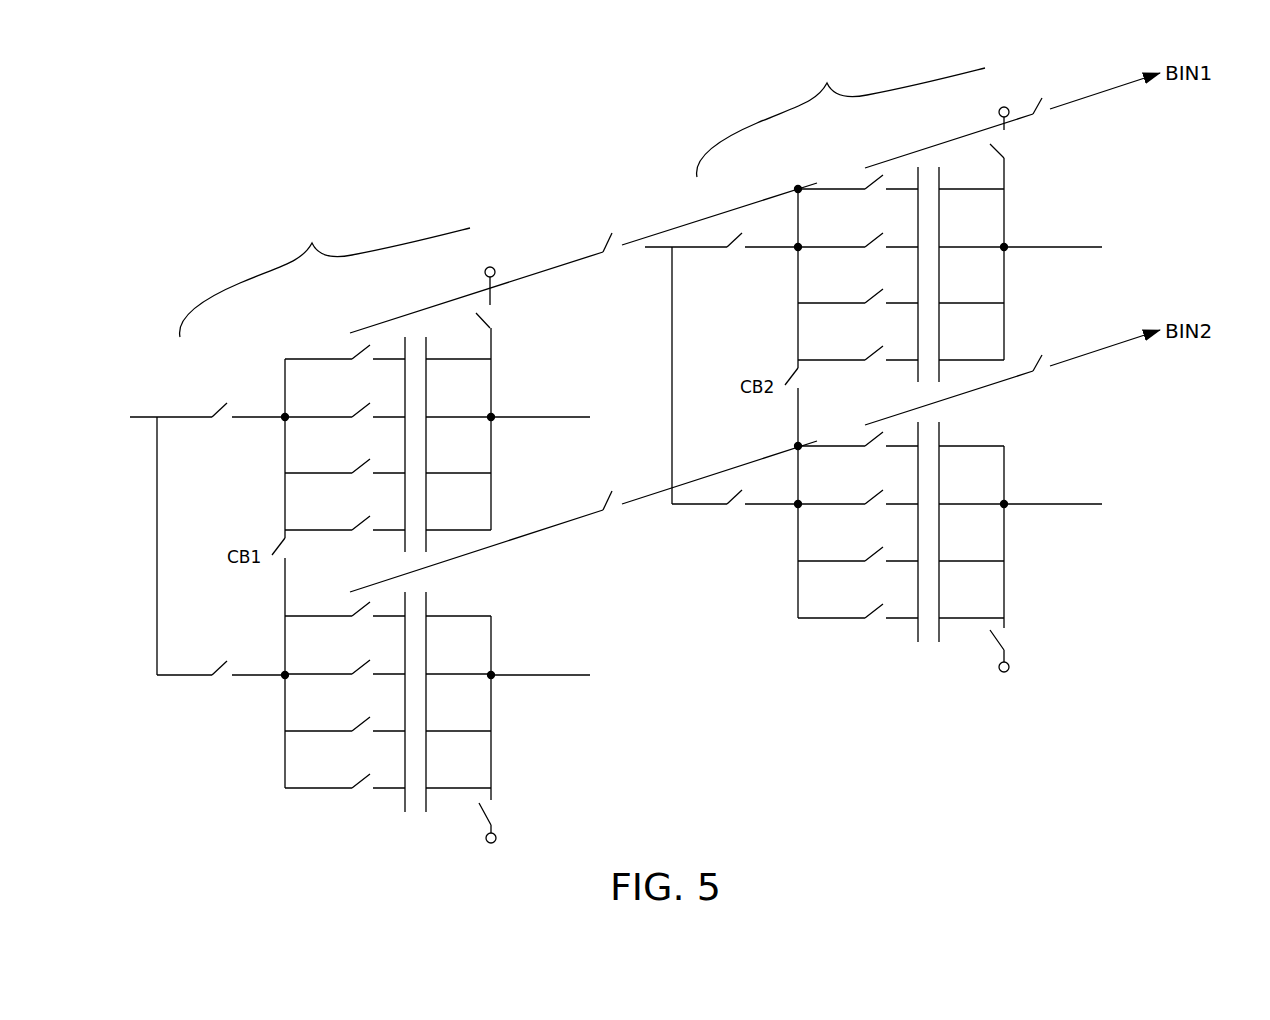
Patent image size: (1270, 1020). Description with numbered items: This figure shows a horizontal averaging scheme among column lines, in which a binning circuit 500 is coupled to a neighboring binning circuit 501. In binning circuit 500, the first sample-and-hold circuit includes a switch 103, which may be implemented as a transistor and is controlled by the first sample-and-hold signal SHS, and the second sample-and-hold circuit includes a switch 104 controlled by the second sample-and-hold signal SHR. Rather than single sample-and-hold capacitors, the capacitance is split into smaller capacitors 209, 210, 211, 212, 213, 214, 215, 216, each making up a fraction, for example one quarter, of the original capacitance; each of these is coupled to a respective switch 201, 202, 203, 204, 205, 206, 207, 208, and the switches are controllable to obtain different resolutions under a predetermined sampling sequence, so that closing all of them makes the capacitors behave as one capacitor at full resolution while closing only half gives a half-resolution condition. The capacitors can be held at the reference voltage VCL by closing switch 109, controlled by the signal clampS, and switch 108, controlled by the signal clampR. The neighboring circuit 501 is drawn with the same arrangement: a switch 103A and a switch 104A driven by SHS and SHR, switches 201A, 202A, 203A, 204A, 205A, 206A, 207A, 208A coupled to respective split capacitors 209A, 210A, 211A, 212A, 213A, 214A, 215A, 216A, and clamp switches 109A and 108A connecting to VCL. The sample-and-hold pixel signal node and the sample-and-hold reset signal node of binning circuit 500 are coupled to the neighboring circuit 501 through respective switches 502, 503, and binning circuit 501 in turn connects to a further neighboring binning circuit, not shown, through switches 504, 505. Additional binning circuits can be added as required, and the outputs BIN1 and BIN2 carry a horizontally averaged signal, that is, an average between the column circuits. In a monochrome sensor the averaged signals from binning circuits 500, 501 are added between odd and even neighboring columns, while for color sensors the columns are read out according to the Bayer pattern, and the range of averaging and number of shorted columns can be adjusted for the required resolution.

The switch 103 is at (220, 425).
The switch 104 is at (221, 659).
The switch 108 is at (480, 815).
The switch 109 is at (481, 305).
The switch 201 is at (350, 354).
The switch 202 is at (350, 412).
The switch 203 is at (350, 468).
The switch 204 is at (350, 525).
The switch 205 is at (350, 611).
The switch 206 is at (350, 669).
The switch 207 is at (350, 726).
The switch 208 is at (350, 783).
The capacitor 209 is at (431, 354).
The capacitor 210 is at (431, 412).
The capacitor 211 is at (431, 468).
The capacitor 212 is at (431, 525).
The capacitor 213 is at (431, 611).
The capacitor 214 is at (431, 669).
The capacitor 215 is at (431, 726).
The capacitor 216 is at (431, 783).
The signal sample-and-hold switch SHS (second column) 103A is at (733, 254).
The reset sample-and-hold switch SHR (second column) 104A is at (737, 486).
The reset clamp switch clampR (second column) 108A is at (985, 641).
The signal clamp switch clampS (second column) 109A is at (989, 128).
The signal capacitor switch (second column) 201A is at (863, 184).
The signal capacitor switch (second column) 202A is at (863, 242).
The signal capacitor switch (second column) 203A is at (863, 298).
The signal capacitor switch (second column) 204A is at (863, 355).
The reset capacitor switch (second column) 205A is at (863, 441).
The reset capacitor switch (second column) 206A is at (863, 499).
The reset capacitor switch (second column) 207A is at (863, 556).
The reset capacitor switch (second column) 208A is at (863, 613).
The signal sampling capacitor C/4 (second column) 209A is at (944, 184).
The signal sampling capacitor C/4 (second column) 210A is at (944, 242).
The signal sampling capacitor C/4 (second column) 211A is at (944, 298).
The signal sampling capacitor C/4 (second column) 212A is at (944, 355).
The reset sampling capacitor C/4 (second column) 213A is at (944, 441).
The reset sampling capacitor C/4 (second column) 214A is at (944, 499).
The reset sampling capacitor C/4 (second column) 215A is at (944, 556).
The reset sampling capacitor C/4 (second column) 216A is at (944, 613).
The binning circuit 500 is at (325, 278).
The neighboring circuit 501 is at (841, 118).
The switch 502 is at (616, 253).
The switch 503 is at (616, 512).
The switch 504 is at (1048, 111).
The switch 505 is at (1048, 369).